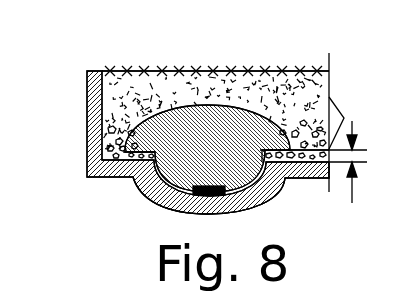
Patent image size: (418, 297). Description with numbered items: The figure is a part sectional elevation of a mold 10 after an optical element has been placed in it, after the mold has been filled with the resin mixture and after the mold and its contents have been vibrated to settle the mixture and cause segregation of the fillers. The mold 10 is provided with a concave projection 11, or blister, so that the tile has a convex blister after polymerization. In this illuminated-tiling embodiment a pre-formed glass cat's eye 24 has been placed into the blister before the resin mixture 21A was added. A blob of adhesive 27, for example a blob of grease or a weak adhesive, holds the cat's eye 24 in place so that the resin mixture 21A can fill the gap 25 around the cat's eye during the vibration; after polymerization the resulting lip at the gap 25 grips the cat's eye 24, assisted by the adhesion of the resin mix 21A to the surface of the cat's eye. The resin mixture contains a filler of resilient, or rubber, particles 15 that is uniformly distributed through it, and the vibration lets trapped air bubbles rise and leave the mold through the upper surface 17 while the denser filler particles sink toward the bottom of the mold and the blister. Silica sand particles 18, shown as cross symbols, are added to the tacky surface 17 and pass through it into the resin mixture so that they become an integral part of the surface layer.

The mold 10 is at (86, 93).
The concave projection 11 is at (154, 201).
The resilient particles 15 is at (221, 72).
The surface 17 is at (172, 76).
The silica sand particles 18 is at (128, 72).
The resin mixture 21A is at (325, 90).
The cat's eye 24 is at (221, 150).
The gap 25 is at (353, 121).
The blob of adhesive 27 is at (194, 190).